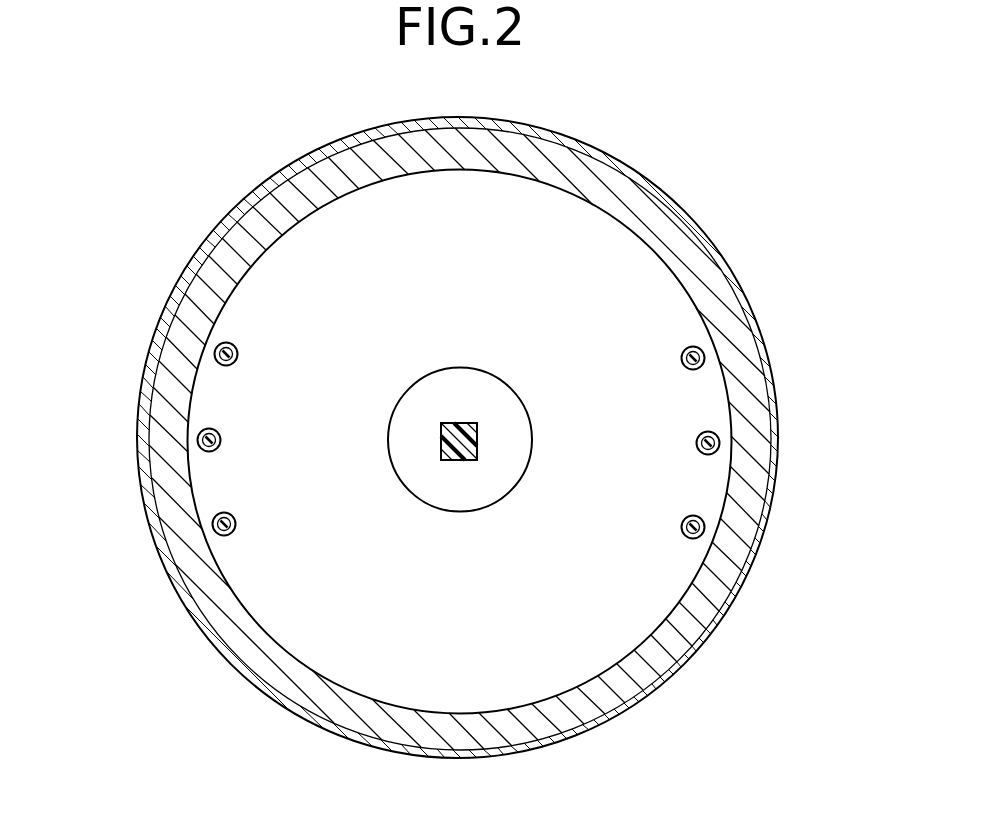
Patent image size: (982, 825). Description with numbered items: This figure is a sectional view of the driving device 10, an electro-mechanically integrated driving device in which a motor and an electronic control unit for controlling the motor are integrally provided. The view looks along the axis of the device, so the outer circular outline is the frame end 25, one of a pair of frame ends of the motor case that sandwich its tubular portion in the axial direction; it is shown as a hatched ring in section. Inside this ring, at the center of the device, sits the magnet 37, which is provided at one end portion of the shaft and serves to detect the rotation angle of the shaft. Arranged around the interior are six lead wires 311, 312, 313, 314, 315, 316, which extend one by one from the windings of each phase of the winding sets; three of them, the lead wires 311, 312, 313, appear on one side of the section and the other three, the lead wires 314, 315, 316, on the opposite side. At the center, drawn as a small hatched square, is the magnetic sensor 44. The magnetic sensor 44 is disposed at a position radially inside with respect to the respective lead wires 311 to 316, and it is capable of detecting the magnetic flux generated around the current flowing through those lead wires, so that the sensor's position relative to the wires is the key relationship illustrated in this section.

The driving device 10 is at (277, 145).
The frame end 25 is at (627, 200).
The magnet 37 is at (443, 392).
The magnetic sensor 44 is at (462, 422).
The lead wire 311 is at (213, 523).
The lead wire 312 is at (217, 346).
The lead wire 313 is at (197, 439).
The lead wire 314 is at (720, 441).
The lead wire 315 is at (703, 352).
The lead wire 316 is at (704, 526).